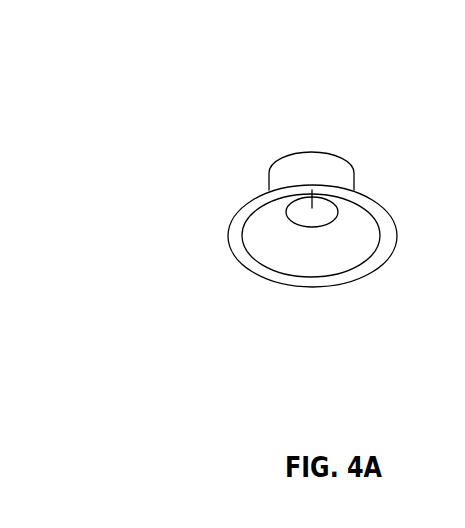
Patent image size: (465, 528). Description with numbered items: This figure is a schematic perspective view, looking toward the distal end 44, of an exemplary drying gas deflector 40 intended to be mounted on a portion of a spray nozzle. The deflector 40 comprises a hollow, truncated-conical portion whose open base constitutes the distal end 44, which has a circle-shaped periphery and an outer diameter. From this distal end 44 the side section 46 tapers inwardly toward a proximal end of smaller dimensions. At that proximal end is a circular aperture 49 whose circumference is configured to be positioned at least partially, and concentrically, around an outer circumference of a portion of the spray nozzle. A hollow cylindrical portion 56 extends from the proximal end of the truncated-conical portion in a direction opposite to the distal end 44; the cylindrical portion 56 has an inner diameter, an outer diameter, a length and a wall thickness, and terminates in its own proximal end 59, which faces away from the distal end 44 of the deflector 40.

The drying gas deflector 40 is at (256, 211).
The distal end of drying gas deflector 44 is at (325, 304).
The side section 46 is at (244, 251).
The aperture 49 is at (266, 146).
The hollow cylindrical portion 56 is at (367, 148).
The proximal end 59 is at (253, 104).